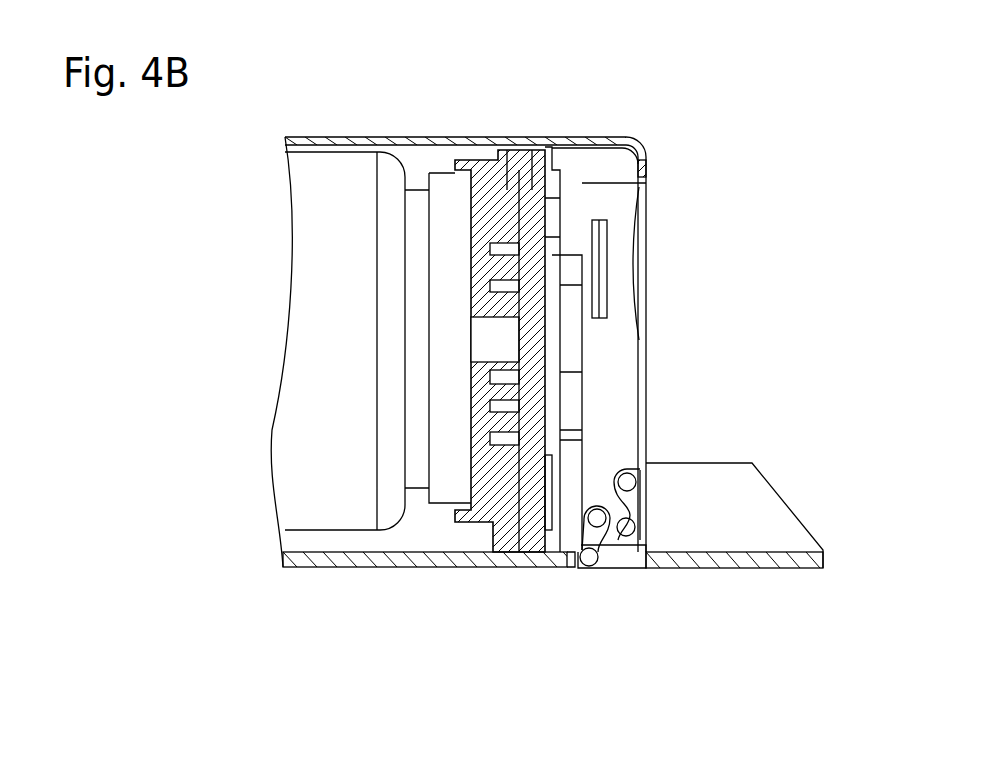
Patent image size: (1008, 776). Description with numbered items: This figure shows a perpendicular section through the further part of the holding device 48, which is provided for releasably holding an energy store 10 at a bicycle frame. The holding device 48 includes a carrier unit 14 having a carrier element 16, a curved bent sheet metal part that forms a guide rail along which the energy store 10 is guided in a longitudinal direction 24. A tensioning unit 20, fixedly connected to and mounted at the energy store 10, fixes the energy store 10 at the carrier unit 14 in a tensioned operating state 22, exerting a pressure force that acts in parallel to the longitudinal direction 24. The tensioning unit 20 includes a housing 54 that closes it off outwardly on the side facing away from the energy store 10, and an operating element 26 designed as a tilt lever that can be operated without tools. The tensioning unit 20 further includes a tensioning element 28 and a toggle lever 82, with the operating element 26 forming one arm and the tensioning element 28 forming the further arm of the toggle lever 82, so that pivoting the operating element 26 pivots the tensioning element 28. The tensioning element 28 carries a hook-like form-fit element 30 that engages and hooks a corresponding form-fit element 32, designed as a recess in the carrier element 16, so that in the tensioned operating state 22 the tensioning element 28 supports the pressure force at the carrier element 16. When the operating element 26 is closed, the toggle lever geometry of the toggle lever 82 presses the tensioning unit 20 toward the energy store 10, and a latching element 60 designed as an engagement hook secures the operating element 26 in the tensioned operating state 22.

The energy store 10 is at (312, 250).
The carrier unit 14 is at (747, 474).
The carrier element 16 is at (775, 520).
The tensioning unit 20 is at (709, 182).
The tensioned operating state 22 is at (676, 225).
The longitudinal direction 24 is at (197, 559).
The operating element 26 is at (632, 364).
The tensioning element 28 is at (600, 568).
The form-fit element 30 is at (635, 558).
The corresponding form-fit element 32 is at (571, 570).
The holding device 48 is at (222, 349).
The housing 54 is at (602, 137).
The latching element 60 is at (600, 265).
The toggle lever 82 is at (598, 501).